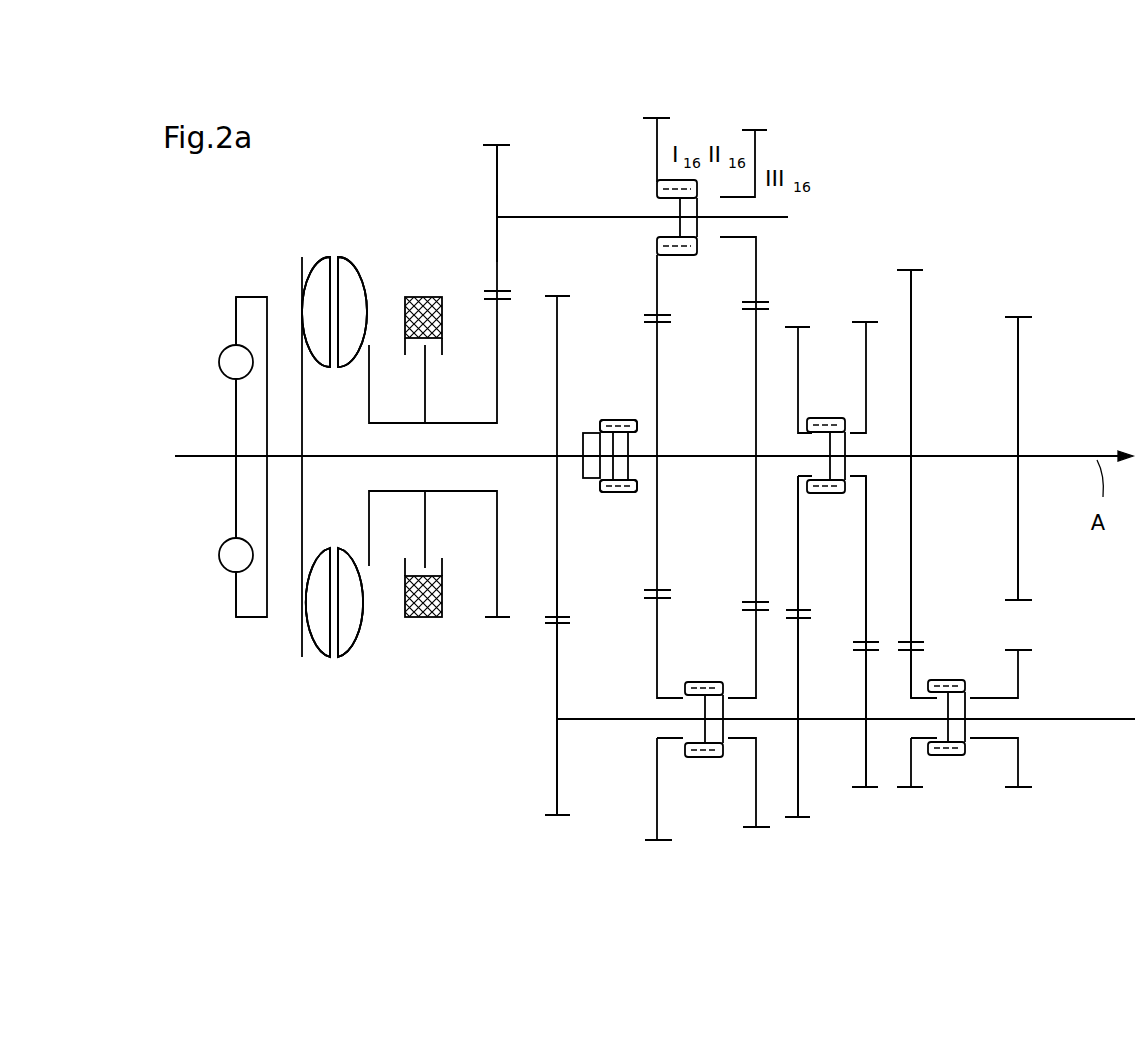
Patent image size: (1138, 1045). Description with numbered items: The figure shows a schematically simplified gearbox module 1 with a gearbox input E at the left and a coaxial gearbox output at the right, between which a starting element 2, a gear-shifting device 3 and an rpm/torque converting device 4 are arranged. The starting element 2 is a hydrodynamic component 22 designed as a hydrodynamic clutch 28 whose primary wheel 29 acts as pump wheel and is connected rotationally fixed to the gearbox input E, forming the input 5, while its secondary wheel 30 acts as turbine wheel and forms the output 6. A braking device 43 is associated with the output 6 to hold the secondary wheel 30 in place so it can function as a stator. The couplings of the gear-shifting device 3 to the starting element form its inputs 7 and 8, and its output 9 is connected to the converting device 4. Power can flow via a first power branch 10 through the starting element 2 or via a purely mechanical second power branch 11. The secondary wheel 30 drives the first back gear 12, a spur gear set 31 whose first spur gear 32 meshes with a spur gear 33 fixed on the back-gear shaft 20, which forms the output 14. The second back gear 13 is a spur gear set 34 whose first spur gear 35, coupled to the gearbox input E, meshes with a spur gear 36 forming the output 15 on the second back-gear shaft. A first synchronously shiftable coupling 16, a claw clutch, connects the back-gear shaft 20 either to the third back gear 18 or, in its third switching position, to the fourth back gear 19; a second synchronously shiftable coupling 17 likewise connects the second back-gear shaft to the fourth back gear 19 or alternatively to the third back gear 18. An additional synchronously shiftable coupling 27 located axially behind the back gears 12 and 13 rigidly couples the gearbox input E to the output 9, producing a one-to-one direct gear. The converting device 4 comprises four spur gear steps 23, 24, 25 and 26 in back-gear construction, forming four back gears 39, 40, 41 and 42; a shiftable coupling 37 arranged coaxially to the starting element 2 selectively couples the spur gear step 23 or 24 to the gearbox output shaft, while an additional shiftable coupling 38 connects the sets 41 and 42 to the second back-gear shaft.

The gearbox module 1 is at (575, 110).
The starting element 2 is at (333, 247).
The gear-shifting device 3 is at (518, 655).
The rpm/torque converting device 4 is at (1007, 297).
The input of the starting element 5 is at (284, 454).
The output of the starting element 6 is at (393, 421).
The input of the gear-shifting device 7 is at (500, 374).
The input of the gear-shifting device 8 is at (532, 453).
The output of the gear-shifting device 9 is at (780, 450).
The first power branch 10 is at (470, 258).
The second power branch 11 is at (573, 418).
The first back gear 12 is at (500, 140).
The second back gear 13 is at (558, 292).
The output of the first back gear 14 is at (497, 240).
The output of the second back gear 15 is at (557, 685).
The first synchronously shiftable coupling 16 is at (687, 265).
The second synchronously shiftable coupling 17 is at (703, 665).
The third back gear 18 is at (657, 108).
The fourth back gear 19 is at (790, 145).
The back-gear shaft 20 is at (597, 217).
The hydrodynamic component 22 is at (348, 269).
The spur gear step 23 is at (826, 800).
The spur gear step 24 is at (895, 805).
The spur gear step 25 is at (952, 484).
The spur gear step 26 is at (1038, 562).
The additional synchronously shiftable coupling 27 is at (618, 512).
The hydrodynamic clutch 28 is at (350, 414).
The primary wheel 29 is at (313, 282).
The secondary wheel 30 is at (353, 343).
The spur gear set 31 is at (515, 190).
The first spur gear 32 is at (500, 324).
The spur gear 33 is at (497, 207).
The spur gear set 34 is at (535, 570).
The first spur gear 35 is at (557, 577).
The spur gear 36 is at (557, 757).
The shiftable coupling 37 is at (828, 395).
The additional shiftable coupling 38 is at (955, 660).
The back gear 39 is at (840, 684).
The back gear 40 is at (911, 687).
The back gear 41 is at (937, 595).
The back gear 42 is at (1053, 458).
The braking device 43 is at (425, 621).
The gearbox input E is at (199, 466).